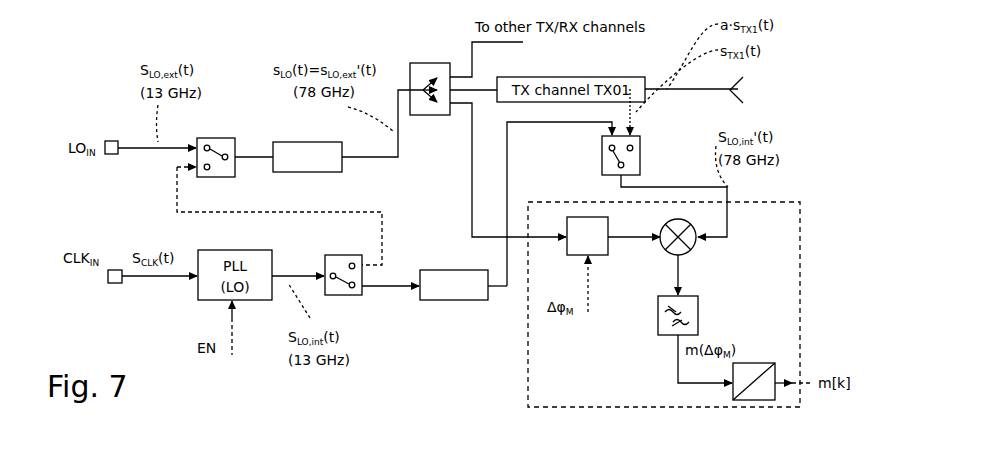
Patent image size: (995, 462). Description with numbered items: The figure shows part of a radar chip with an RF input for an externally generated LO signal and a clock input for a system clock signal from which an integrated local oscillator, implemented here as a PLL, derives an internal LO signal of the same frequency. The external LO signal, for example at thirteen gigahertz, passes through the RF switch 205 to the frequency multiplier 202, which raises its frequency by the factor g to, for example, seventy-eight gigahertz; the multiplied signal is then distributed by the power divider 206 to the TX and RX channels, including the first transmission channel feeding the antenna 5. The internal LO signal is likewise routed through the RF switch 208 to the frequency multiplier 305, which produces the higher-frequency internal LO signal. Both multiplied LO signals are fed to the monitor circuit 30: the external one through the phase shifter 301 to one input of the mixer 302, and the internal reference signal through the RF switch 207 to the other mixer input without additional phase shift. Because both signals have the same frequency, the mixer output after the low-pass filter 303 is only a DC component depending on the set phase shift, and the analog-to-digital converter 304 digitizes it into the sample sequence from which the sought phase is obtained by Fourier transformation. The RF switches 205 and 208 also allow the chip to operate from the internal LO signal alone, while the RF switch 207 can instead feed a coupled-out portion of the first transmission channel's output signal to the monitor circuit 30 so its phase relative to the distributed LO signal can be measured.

The antenna 5 is at (748, 93).
The monitor circuit 30 is at (664, 317).
The frequency multiplier 202 is at (343, 172).
The RF switch 205 is at (215, 138).
The power divider 206 is at (424, 63).
The RF switch 207 is at (600, 160).
The RF switch 208 is at (352, 295).
The phase shifter 301 is at (594, 256).
The mixer 302 is at (693, 248).
The low-pass filter 303 is at (660, 338).
The analog-to-digital converter 304 is at (753, 363).
The frequency multiplier 305 is at (453, 300).